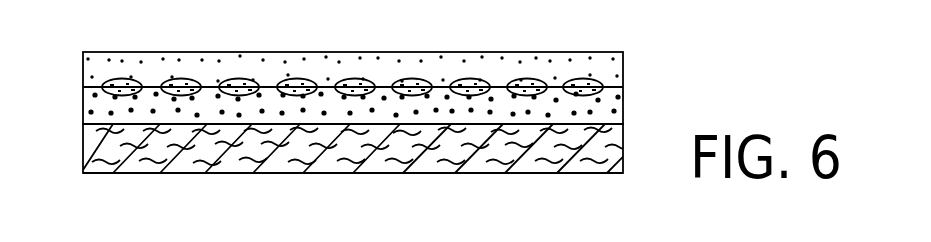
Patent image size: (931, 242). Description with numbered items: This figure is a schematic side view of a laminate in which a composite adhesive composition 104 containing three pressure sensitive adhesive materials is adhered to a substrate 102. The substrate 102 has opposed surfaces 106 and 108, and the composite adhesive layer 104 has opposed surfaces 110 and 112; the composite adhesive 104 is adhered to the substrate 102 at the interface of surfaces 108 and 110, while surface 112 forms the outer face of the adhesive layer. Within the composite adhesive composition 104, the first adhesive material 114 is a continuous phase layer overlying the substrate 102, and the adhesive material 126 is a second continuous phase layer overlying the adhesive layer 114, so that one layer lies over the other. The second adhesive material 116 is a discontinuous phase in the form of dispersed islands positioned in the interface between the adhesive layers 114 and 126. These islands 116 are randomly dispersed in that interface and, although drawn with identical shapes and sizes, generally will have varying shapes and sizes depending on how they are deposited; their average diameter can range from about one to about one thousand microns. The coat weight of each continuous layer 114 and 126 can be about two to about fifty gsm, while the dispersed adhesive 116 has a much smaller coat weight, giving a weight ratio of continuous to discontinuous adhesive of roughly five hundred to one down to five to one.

The substrate 102 is at (83, 141).
The composite adhesive composition 104 is at (83, 75).
The surface of substrate 106 is at (145, 173).
The surface of substrate 108 is at (307, 106).
The surface of composite adhesive layer 110 is at (381, 124).
The surface of composite adhesive layer 112 is at (557, 87).
The first adhesive material 114 is at (613, 105).
The second adhesive material 116 is at (597, 79).
The adhesive material 126 is at (195, 62).